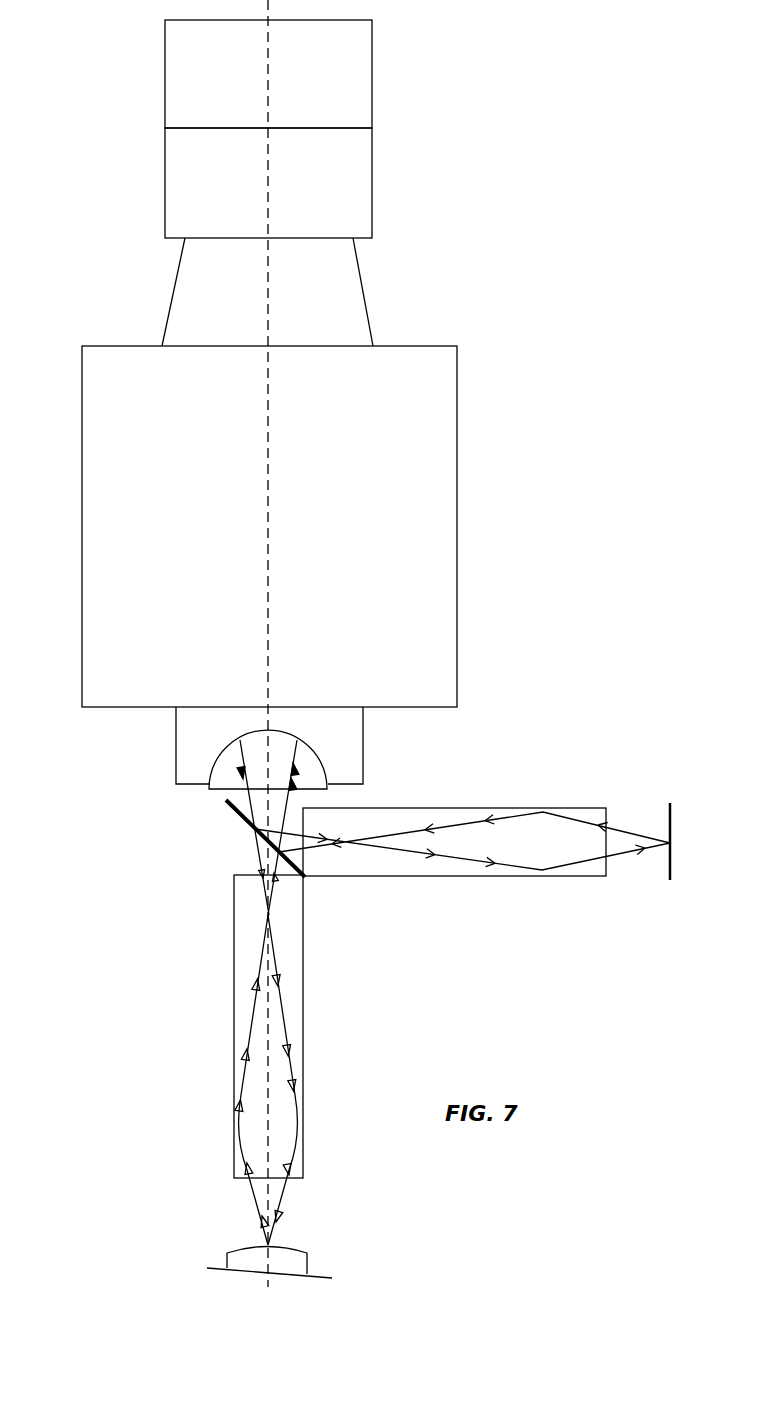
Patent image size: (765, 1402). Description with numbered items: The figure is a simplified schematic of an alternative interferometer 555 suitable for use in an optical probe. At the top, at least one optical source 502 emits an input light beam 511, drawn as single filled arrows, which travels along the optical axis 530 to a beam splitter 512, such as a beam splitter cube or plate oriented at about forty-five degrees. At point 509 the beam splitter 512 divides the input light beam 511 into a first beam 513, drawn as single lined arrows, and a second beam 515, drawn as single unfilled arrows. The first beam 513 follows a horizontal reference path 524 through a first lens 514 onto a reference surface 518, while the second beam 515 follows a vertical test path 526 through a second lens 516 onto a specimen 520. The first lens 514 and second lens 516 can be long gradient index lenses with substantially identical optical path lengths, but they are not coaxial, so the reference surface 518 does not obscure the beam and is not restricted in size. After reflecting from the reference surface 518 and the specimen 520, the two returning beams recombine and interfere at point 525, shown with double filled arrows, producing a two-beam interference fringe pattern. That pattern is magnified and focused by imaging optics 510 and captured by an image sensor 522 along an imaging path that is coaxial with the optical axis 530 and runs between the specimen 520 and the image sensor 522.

The optical source 502 is at (246, 86).
The image sensor 522 is at (246, 197).
The imaging optics 510 is at (250, 556).
The optical axis 530 is at (268, 632).
The interferometer 555 is at (506, 78).
The input light beam 511 is at (242, 750).
The beam splitter 512 is at (238, 812).
The point 509 is at (253, 828).
The second beam 515 is at (278, 853).
The first beam 513 is at (330, 837).
The first lens 514 is at (521, 807).
The reference surface 518 is at (673, 868).
The point 525 is at (283, 852).
The reference path 524 is at (670, 880).
The second lens 516 is at (303, 998).
The test path 526 is at (167, 832).
The specimen 520 is at (252, 1250).